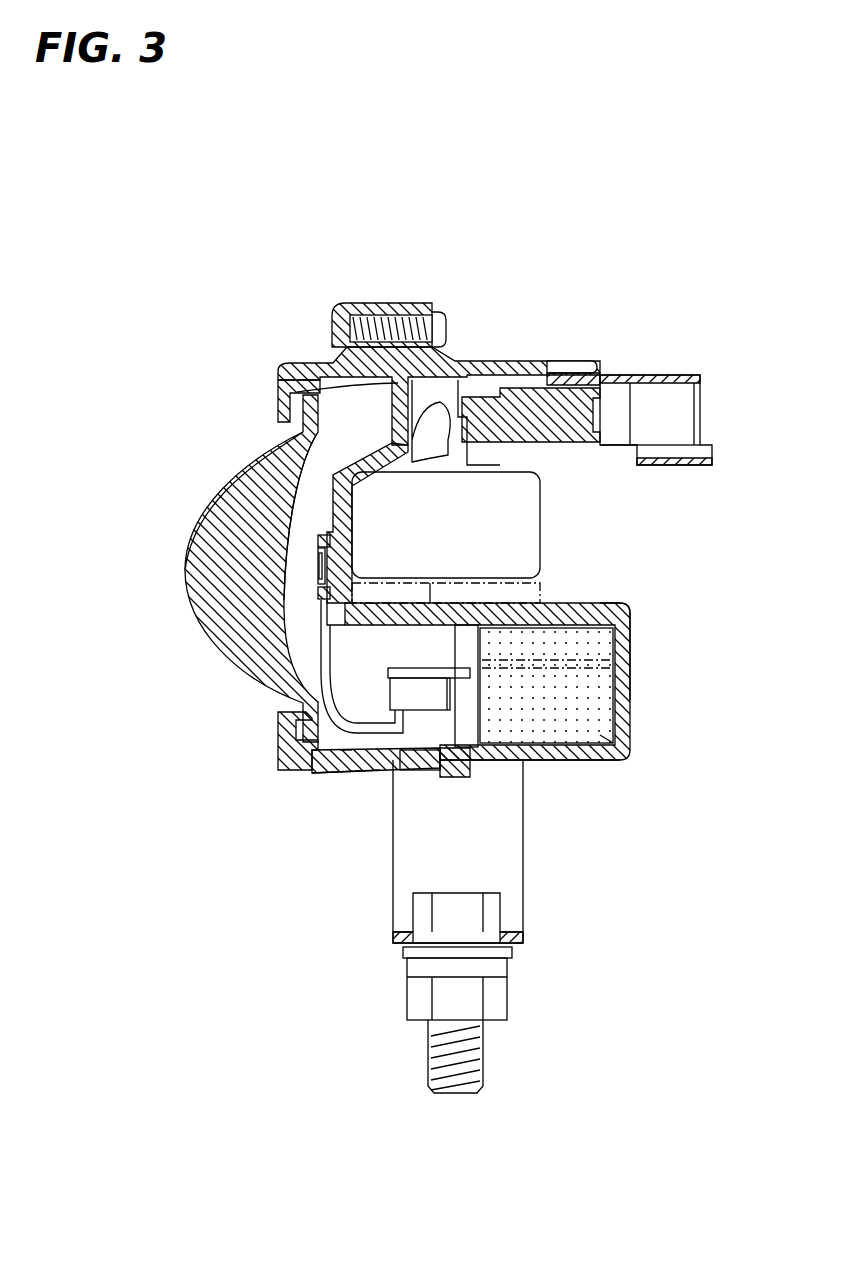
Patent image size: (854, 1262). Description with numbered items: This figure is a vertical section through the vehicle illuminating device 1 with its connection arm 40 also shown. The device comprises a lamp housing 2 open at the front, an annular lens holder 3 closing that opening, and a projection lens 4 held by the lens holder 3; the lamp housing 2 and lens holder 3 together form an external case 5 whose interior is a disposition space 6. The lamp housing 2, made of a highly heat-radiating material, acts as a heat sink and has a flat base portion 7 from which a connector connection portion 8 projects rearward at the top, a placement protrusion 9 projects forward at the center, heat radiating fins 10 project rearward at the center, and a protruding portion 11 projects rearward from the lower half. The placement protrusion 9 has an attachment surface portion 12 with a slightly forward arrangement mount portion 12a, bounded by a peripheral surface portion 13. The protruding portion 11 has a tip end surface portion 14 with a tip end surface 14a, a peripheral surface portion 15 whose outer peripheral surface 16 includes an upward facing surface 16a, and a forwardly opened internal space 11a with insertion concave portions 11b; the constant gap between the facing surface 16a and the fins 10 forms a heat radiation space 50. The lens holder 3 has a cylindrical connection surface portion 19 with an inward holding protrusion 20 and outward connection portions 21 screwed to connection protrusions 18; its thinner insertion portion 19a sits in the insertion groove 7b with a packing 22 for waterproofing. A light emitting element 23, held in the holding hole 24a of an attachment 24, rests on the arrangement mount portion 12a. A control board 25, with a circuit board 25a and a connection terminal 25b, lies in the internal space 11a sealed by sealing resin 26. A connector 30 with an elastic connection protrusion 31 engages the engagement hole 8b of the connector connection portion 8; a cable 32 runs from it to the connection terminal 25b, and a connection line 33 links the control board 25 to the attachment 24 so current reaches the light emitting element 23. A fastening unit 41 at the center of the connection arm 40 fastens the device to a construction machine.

The vehicle illuminating device 1 is at (300, 360).
The lamp housing 2 is at (482, 368).
The lens holder 3 is at (318, 363).
The projection lens 4 is at (202, 527).
The external case 5 is at (360, 172).
The disposition space 6 is at (341, 443).
The base portion 7 is at (290, 393).
The insertion groove 7b is at (393, 765).
The connector connection portion 8 is at (517, 361).
The engagement hole 8b is at (550, 362).
The placement protrusion 9 is at (343, 500).
The heat radiating fins 10 is at (530, 497).
The protruding portion 11 is at (622, 660).
The internal space 11a is at (625, 650).
The insertion concave portions 11b is at (530, 595).
The attachment surface portion 12 is at (343, 520).
The arrangement mount portion 12a is at (325, 620).
The peripheral surface portion 13 is at (343, 460).
The tip end surface portion 14 is at (635, 702).
The tip end surface 14a is at (635, 677).
The peripheral surface portion 15 is at (555, 762).
The outer peripheral surface 16 is at (585, 762).
The facing surface 16a is at (620, 603).
The connection protrusions 18 is at (417, 303).
The connection surface portion 19 is at (330, 775).
The insertion portion 19a is at (417, 770).
The holding protrusion 20 is at (280, 738).
The connection portions 21 is at (385, 303).
The packing 22 is at (446, 355).
The light emitting element 23 is at (318, 578).
The attachment 24 is at (318, 538).
The holding hole 24a is at (320, 594).
The control board 25 is at (330, 655).
The circuit board 25a is at (398, 687).
The connection terminal 25b is at (342, 766).
The sealing resin 26 is at (605, 737).
The connector 30 is at (662, 375).
The connection protrusion 31 is at (583, 362).
The cable 32 is at (500, 465).
The connection line 33 is at (310, 770).
The connection arm 40 is at (500, 867).
The fastening unit 41 is at (503, 967).
The heat radiation space 50 is at (560, 572).